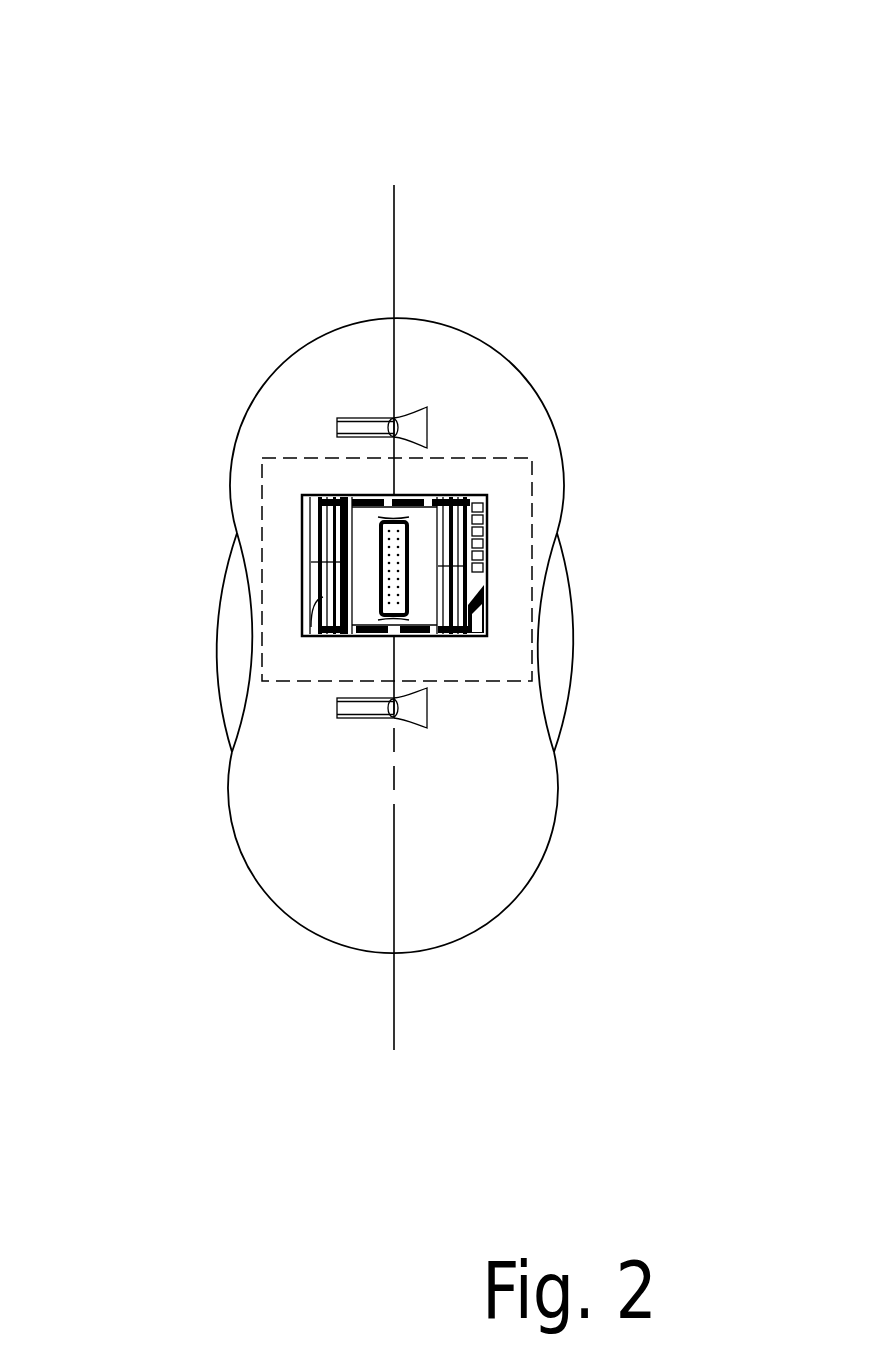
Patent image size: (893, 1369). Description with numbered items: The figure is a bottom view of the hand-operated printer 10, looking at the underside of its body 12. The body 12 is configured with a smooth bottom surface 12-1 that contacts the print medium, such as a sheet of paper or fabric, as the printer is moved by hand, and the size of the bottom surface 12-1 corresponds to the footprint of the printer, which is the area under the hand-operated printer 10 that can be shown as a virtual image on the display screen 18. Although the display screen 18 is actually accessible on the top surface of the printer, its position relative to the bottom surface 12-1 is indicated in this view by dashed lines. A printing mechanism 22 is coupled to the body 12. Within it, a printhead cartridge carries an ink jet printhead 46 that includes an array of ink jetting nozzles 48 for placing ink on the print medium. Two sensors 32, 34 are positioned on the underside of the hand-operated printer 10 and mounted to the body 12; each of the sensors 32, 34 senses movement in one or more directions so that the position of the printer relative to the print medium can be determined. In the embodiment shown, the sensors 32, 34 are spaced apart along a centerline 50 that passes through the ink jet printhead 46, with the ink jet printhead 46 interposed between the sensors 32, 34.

The hand-operated printer 10 is at (290, 147).
The body 12 is at (270, 910).
The bottom surface 12-1 is at (445, 818).
The display screen 18 is at (532, 500).
The printing mechanism 22 is at (272, 563).
The sensor 32 is at (352, 418).
The sensor 34 is at (340, 703).
The ink jet printhead 46 is at (358, 547).
The array of ink jetting nozzles 48 is at (402, 496).
The centerline 50 is at (392, 1000).